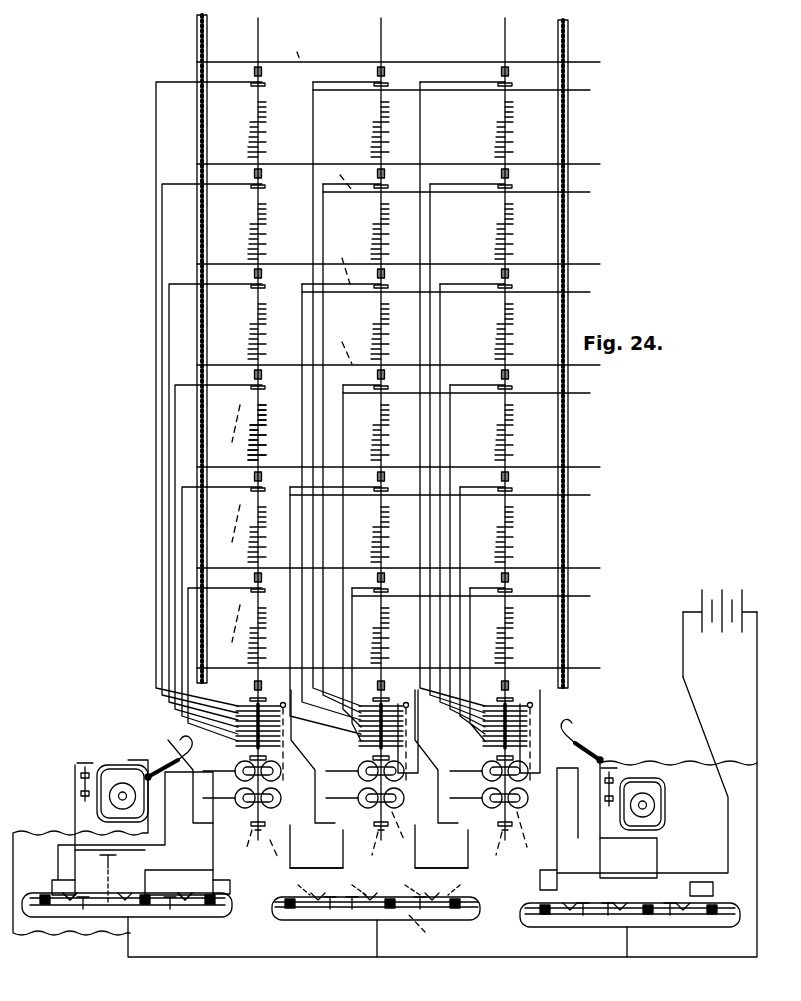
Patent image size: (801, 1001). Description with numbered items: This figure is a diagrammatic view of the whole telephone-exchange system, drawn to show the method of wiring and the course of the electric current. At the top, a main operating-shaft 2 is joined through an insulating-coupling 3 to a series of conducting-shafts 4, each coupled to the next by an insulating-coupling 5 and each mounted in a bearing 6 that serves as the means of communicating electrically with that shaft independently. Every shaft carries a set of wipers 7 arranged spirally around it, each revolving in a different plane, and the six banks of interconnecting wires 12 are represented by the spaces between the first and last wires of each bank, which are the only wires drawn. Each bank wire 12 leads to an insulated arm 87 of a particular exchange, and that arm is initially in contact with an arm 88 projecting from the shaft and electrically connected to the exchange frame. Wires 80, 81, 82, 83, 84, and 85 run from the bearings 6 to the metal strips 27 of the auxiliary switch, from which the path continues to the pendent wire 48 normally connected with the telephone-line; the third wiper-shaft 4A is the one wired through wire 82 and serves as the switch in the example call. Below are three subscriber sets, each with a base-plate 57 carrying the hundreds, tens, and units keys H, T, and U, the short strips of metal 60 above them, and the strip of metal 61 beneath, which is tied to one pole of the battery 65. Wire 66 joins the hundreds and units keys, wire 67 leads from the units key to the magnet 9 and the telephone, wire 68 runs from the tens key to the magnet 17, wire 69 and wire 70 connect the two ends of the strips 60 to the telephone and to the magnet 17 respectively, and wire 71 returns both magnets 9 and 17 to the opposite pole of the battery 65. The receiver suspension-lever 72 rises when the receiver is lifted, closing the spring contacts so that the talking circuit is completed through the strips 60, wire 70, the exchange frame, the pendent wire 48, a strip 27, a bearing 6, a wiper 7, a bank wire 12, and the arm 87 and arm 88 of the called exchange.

The main operating-shaft 2 is at (386, 822).
The insulating-coupling 3 is at (250, 690).
The conducting-shaft 4 is at (264, 125).
The third wiper-shaft 4A is at (268, 432).
The insulating-coupling 5 is at (510, 74).
The bearing 6 is at (252, 82).
The wipers 7 is at (516, 162).
The magnet 9 is at (213, 772).
The interconnecting wires 12 is at (398, 350).
The magnet 17 is at (397, 841).
The metal strips 27 is at (246, 744).
The pendent wire 48 is at (396, 737).
The base-plate 57 is at (423, 935).
The short strips of metal 60 is at (376, 887).
The strip of metal 61 is at (192, 917).
The battery 65 is at (723, 628).
The wire 66 is at (205, 918).
The wire 67 is at (131, 727).
The wire 68 is at (146, 870).
The wire 69 is at (74, 780).
The wire 70 is at (303, 831).
The wire 71 is at (509, 781).
The lever 72 is at (58, 792).
The wire 80 is at (248, 593).
The wire 81 is at (248, 491).
The wire 82 is at (248, 389).
The wire 83 is at (190, 284).
The wire 84 is at (190, 182).
The wire 85 is at (186, 80).
The insulated arm 87 is at (408, 152).
The arm 88 is at (363, 840).
The hundreds key H is at (55, 895).
The tens key T is at (618, 918).
The units key U is at (195, 918).